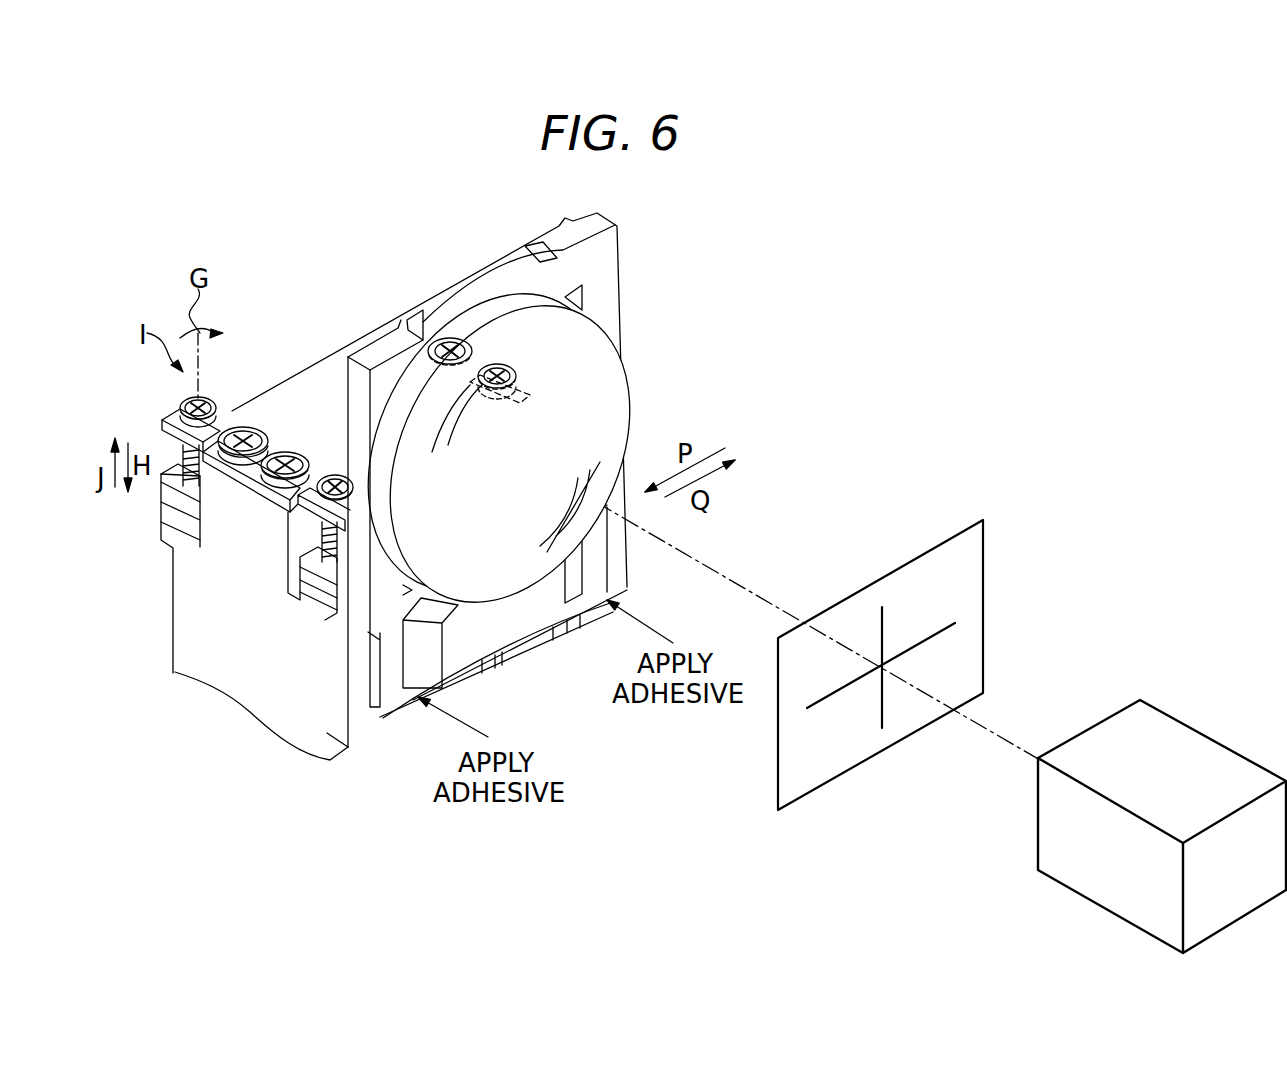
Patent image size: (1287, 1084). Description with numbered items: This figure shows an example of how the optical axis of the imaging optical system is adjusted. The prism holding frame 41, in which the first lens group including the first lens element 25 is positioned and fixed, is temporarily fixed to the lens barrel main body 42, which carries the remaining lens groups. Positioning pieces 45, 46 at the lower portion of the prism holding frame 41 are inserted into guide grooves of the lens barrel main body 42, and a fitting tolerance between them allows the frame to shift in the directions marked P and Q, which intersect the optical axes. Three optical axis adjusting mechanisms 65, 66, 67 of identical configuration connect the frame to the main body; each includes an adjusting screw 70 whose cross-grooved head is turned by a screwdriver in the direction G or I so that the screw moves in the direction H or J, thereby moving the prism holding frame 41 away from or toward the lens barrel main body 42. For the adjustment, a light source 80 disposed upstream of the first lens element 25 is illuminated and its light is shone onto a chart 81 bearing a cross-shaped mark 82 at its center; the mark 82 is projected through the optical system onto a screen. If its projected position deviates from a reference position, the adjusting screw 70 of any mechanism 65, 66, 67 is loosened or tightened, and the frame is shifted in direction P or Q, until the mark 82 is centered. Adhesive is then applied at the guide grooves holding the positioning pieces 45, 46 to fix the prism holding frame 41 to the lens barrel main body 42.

The first lens element 25 is at (620, 398).
The prism holding frame 41 is at (622, 261).
The lens barrel main body 42 is at (245, 667).
The positioning piece 45 is at (395, 680).
The positioning piece 46 is at (595, 545).
The optical axis adjusting mechanism 65 is at (238, 392).
The optical axis adjusting mechanism 66 is at (296, 530).
The optical axis adjusting mechanism 67 is at (452, 322).
The adjusting screw 70 is at (183, 400).
The light source 80 is at (1078, 857).
The chart 81 is at (973, 557).
The mark 82 is at (828, 698).